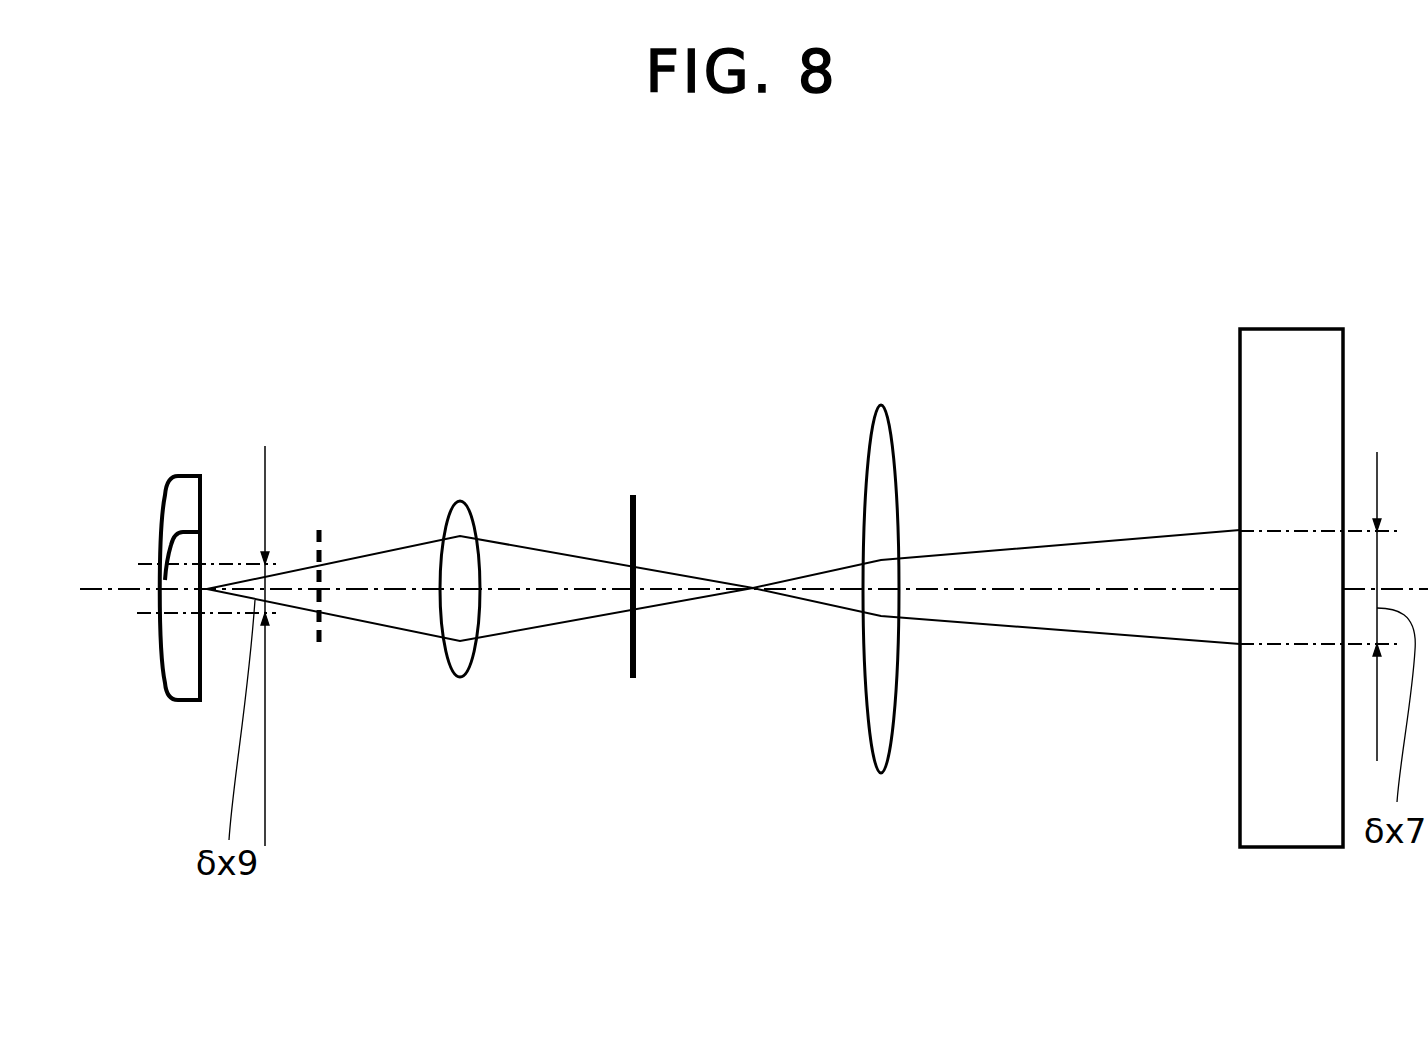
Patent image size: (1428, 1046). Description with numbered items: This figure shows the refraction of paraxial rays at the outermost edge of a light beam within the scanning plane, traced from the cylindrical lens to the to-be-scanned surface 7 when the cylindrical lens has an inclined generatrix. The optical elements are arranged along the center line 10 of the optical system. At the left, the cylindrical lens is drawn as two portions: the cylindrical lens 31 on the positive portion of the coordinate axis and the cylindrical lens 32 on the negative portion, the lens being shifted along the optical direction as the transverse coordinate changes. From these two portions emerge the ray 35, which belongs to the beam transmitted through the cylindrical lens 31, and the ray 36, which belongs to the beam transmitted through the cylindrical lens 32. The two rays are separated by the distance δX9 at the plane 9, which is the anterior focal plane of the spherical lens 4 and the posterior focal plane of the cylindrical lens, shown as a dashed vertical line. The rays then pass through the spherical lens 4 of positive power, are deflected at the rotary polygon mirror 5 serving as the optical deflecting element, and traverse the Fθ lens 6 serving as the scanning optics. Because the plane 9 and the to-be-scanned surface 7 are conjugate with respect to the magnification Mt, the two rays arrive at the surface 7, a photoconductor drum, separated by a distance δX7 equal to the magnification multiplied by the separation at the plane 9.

The spherical lens 4 is at (463, 512).
The rotary polygon mirror 5 is at (629, 510).
The Fθ lens 6 is at (880, 442).
The to-be-scanned surface 7 is at (1253, 364).
The anterior focal plane of the spherical lens 9 is at (320, 536).
The center line of the optical system 10 is at (550, 592).
The cylindrical lens in the (+) portion of the coordinate axis Y3 31 is at (187, 688).
The cylindrical lens in the (−) portion of the coordinate axis Y3 32 is at (187, 486).
The ray transmitted through the cylindrical lens 31 35 is at (382, 623).
The ray transmitted through the cylindrical lens 32 36 is at (400, 547).